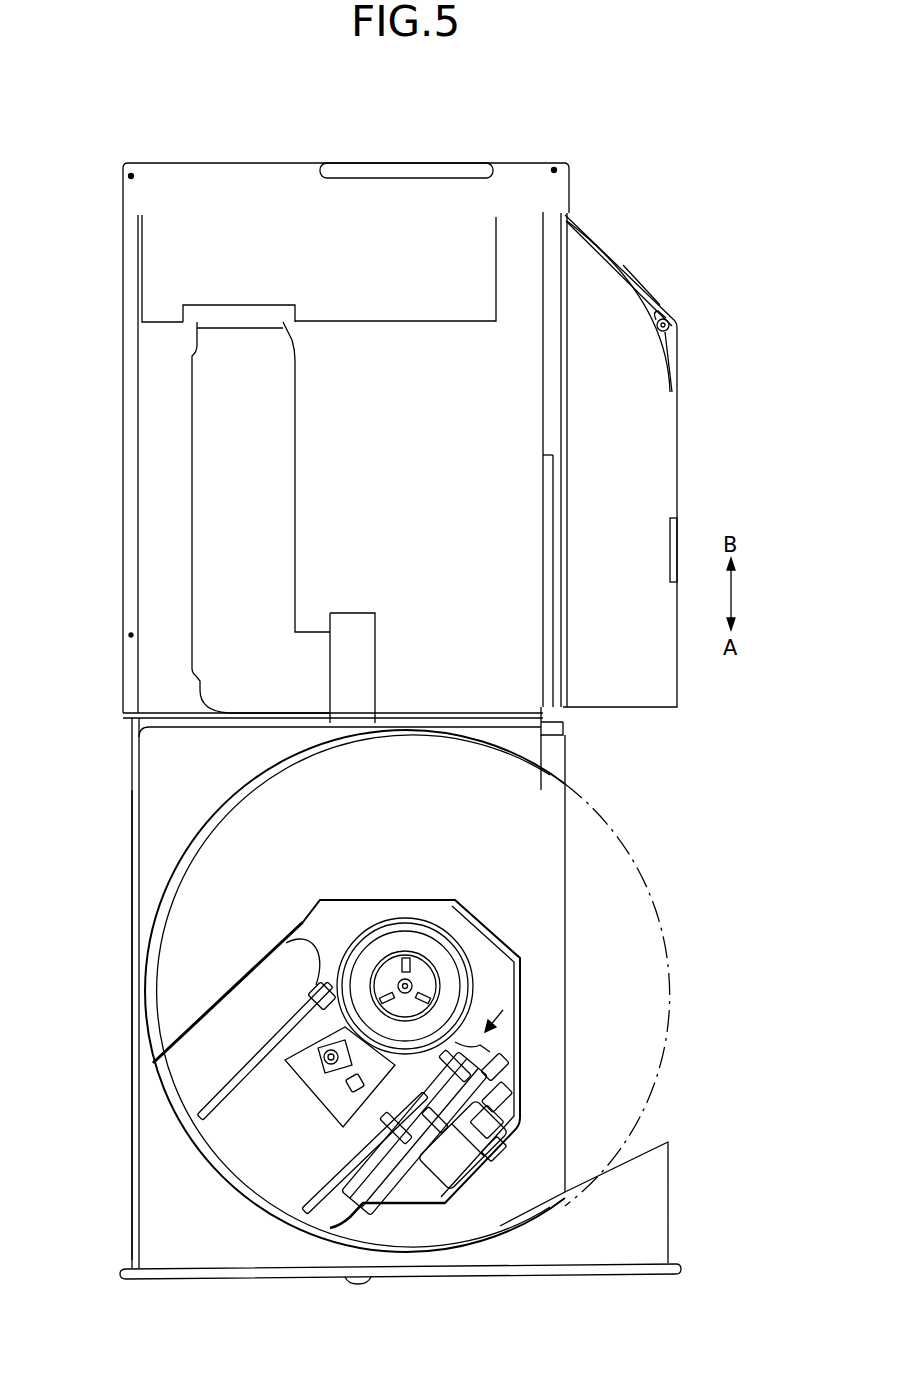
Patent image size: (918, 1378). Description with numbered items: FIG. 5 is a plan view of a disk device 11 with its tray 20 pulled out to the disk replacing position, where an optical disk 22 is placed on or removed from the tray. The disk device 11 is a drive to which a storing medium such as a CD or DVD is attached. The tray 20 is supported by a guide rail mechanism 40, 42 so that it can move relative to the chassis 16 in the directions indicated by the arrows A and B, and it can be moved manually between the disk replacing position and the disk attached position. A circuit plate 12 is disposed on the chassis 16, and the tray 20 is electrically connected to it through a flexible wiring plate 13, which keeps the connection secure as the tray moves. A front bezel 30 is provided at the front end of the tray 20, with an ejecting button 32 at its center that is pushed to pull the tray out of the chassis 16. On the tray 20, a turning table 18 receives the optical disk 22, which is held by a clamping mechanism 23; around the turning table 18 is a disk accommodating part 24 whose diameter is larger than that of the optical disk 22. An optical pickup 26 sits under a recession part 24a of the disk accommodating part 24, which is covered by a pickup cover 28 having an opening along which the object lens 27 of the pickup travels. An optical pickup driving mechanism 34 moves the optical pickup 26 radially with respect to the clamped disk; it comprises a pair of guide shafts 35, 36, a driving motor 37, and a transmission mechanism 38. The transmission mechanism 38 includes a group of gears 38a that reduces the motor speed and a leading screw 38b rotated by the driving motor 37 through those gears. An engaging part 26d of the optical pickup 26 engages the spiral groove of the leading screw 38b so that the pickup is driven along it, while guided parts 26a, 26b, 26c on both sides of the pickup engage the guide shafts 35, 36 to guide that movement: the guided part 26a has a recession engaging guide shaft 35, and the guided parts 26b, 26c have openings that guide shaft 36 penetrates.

The disk device 11 is at (458, 134).
The circuit plate 12 is at (152, 268).
The wiring plate 13 is at (190, 491).
The chassis 16 is at (676, 443).
The turning table 18 is at (468, 918).
The tray 20 is at (132, 1103).
The optical disk 22 is at (640, 868).
The clamping mechanism 23 is at (408, 964).
The disk accommodating part 24 is at (575, 790).
The recession part 24a is at (247, 975).
The optical pickup 26 is at (305, 1022).
The guided part 26a is at (340, 968).
The guided part 26b is at (393, 1165).
The guided part 26c is at (505, 1055).
The engaging part 26d is at (498, 1150).
The object lens 27 is at (312, 1095).
The pickup cover 28 is at (530, 920).
The front bezel 30 is at (507, 1275).
The ejecting button 32 is at (362, 1283).
The optical pickup driving mechanism 34 is at (503, 1010).
The guide shaft 35 is at (238, 1068).
The guide shaft 36 is at (337, 1177).
The driving motor 37 is at (475, 1172).
The transmission mechanism 38 is at (505, 1130).
The group of gears 38a is at (508, 1090).
The leading screw 38b is at (392, 1205).
The guide rail mechanism 40 is at (131, 826).
The guide rail mechanism 42 is at (557, 713).